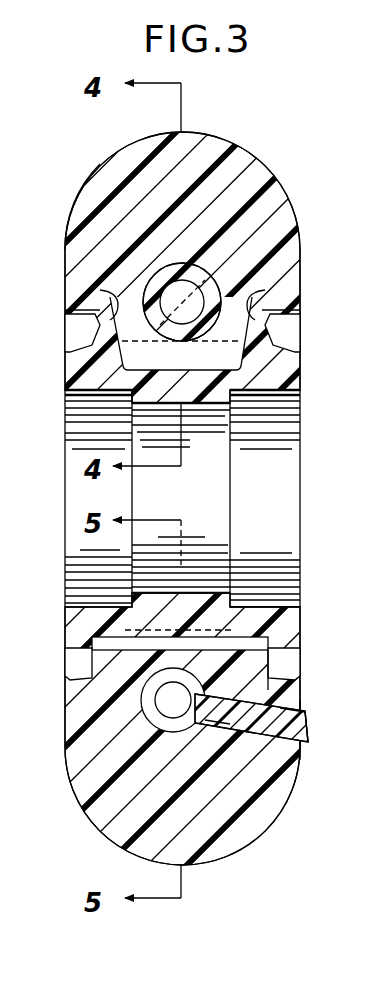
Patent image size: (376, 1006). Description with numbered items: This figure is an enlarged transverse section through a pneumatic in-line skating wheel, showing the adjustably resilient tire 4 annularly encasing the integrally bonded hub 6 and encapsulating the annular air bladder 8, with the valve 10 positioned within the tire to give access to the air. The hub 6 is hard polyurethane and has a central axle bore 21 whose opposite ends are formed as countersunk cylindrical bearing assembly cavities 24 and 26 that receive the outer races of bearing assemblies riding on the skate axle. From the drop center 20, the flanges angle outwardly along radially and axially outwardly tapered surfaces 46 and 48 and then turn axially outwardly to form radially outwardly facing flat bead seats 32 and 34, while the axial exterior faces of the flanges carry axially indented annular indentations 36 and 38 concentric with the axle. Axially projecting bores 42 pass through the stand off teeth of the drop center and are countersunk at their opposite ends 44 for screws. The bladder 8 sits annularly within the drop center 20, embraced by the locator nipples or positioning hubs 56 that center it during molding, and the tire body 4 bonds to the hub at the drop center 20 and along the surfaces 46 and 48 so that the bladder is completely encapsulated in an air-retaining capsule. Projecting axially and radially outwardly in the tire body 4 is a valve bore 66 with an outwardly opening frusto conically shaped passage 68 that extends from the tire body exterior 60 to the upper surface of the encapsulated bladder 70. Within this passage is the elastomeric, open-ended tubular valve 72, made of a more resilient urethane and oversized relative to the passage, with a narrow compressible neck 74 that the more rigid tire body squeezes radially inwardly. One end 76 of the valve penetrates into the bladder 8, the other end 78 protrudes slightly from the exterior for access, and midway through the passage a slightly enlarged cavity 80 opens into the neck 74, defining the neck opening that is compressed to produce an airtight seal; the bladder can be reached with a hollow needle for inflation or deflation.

The tire 4 is at (95, 175).
The hub 6 is at (62, 455).
The air bladder 8 is at (182, 266).
The valve 10 is at (312, 727).
The drop center 20 is at (207, 420).
The central axle bore 21 is at (180, 593).
The bearing assembly cavity 24 is at (77, 604).
The bearing assembly cavity 26 is at (280, 604).
The bead seat 32 is at (70, 311).
The bead seat 34 is at (298, 311).
The annular indentation 36 is at (72, 346).
The annular indentation 38 is at (292, 347).
The axially projecting bore 42 is at (92, 641).
The countersunk end 44 is at (80, 660).
The tapered surface 46 is at (100, 291).
The tapered surface 48 is at (265, 291).
The positioning hub 56 is at (212, 293).
The tire body exterior 60 is at (248, 176).
The valve bore 66 is at (298, 762).
The frusto conically shaped passage 68 is at (272, 795).
The upper surface of the encapsulated bladder 70 is at (215, 725).
The tubular valve 72 is at (308, 742).
The compressible neck 74 is at (285, 693).
The valve end 76 is at (145, 706).
The valve end 78 is at (300, 713).
The enlarged cavity 80 is at (180, 730).